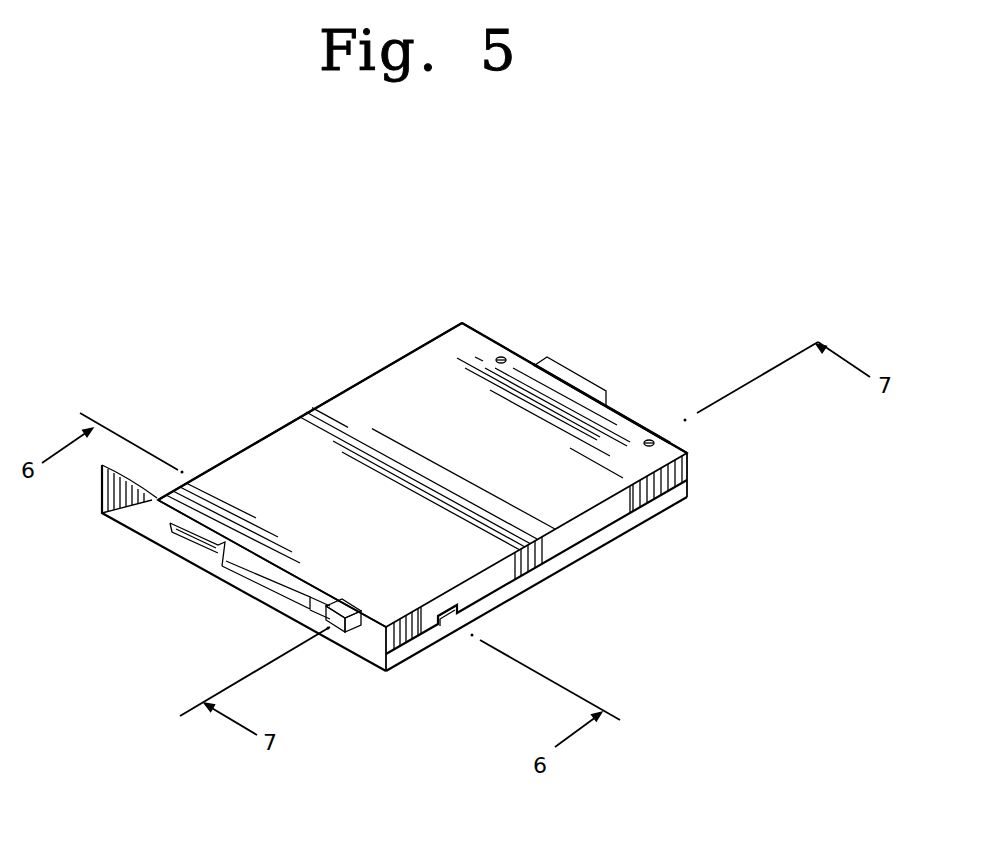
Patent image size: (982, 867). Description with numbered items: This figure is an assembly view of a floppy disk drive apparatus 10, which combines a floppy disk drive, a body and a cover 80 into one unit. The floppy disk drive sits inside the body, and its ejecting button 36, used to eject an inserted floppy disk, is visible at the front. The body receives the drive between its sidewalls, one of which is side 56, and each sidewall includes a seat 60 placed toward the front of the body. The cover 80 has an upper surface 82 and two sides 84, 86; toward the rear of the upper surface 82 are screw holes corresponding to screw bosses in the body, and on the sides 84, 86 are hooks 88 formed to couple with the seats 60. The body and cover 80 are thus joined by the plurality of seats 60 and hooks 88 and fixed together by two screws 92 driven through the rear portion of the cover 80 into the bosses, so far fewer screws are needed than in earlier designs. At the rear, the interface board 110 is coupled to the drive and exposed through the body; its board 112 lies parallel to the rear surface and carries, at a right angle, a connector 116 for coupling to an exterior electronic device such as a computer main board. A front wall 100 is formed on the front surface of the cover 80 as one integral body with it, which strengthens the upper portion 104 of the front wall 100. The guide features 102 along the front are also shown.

The floppy disk drive apparatus 10 is at (248, 226).
The ejecting button 36 is at (332, 630).
The side 56 is at (520, 582).
The seat 60 is at (451, 636).
The cover 80 is at (195, 444).
The upper surface 82 is at (285, 447).
The side 84 is at (552, 543).
The side 86 is at (358, 390).
The hook 88 is at (455, 637).
The screw 92 is at (503, 357).
The front wall 100 is at (133, 517).
The guide rail 102 is at (243, 561).
The upper portion 104 is at (268, 562).
The interface board 110 is at (668, 433).
The board 112 is at (636, 390).
The connector 116 is at (575, 370).